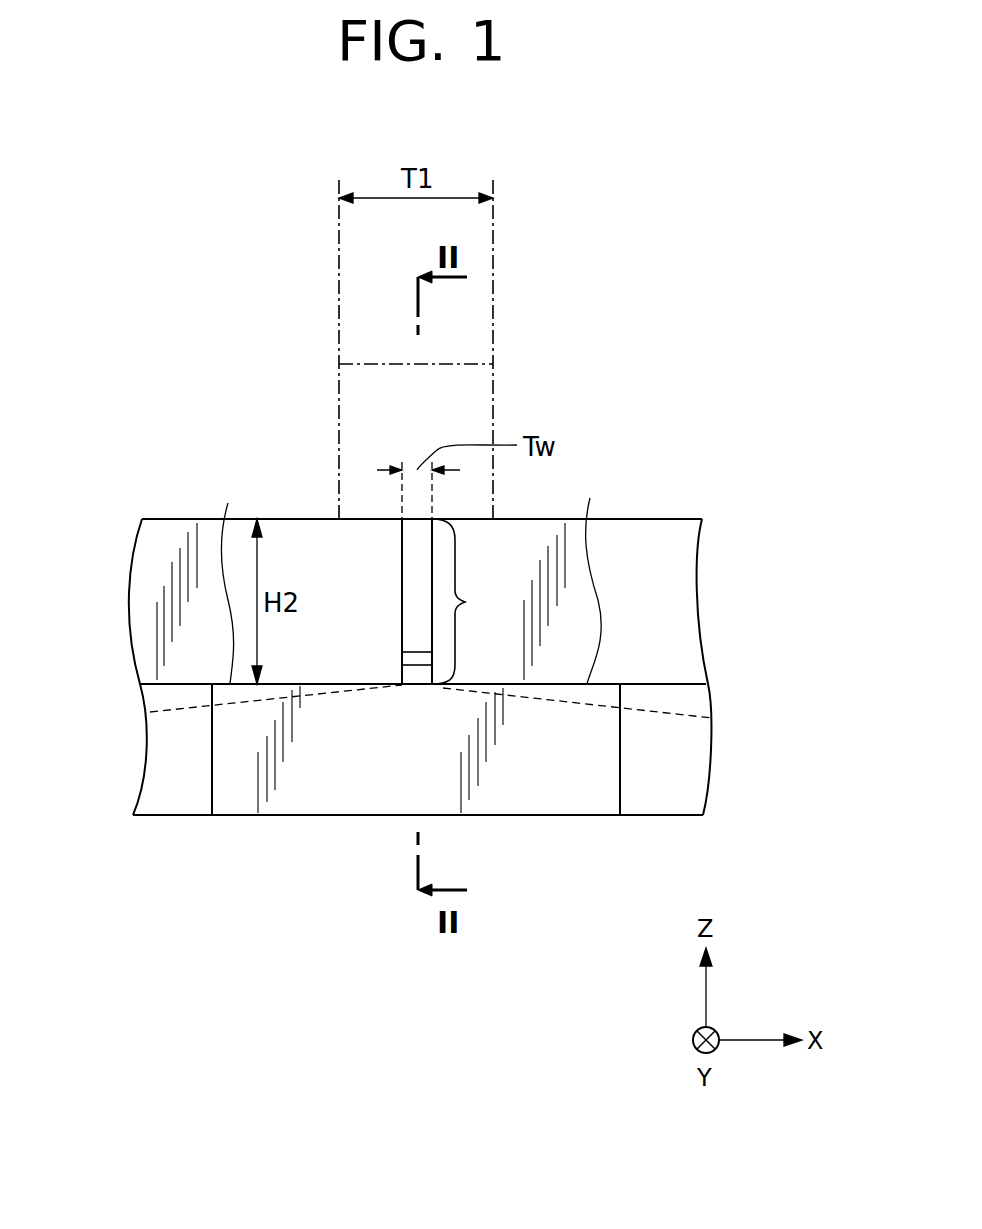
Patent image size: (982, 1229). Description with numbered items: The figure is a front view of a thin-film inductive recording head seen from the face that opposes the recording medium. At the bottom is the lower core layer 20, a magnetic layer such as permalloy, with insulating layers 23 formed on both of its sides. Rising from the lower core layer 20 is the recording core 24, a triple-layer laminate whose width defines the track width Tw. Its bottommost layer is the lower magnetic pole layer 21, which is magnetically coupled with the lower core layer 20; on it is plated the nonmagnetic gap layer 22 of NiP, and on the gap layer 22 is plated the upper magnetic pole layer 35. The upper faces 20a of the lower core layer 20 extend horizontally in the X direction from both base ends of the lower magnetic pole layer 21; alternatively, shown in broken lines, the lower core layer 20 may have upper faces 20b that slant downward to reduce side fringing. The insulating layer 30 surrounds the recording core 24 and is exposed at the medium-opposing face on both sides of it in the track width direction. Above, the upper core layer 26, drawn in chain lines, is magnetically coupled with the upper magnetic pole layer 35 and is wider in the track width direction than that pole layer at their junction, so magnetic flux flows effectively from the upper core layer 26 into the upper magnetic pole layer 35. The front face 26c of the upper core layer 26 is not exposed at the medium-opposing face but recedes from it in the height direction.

The lower core layer 20 is at (540, 792).
The upper faces 20a is at (414, 575).
The upper faces 20b is at (178, 712).
The lower magnetic pole layer 21 is at (412, 674).
The gap layer 22 is at (402, 660).
The insulating layers 23 is at (185, 793).
The recording core 24 is at (469, 601).
The upper core layer 26 is at (339, 394).
The front face 26c is at (480, 385).
The insulating layer 30 is at (153, 570).
The upper magnetic pole layer 35 is at (402, 565).